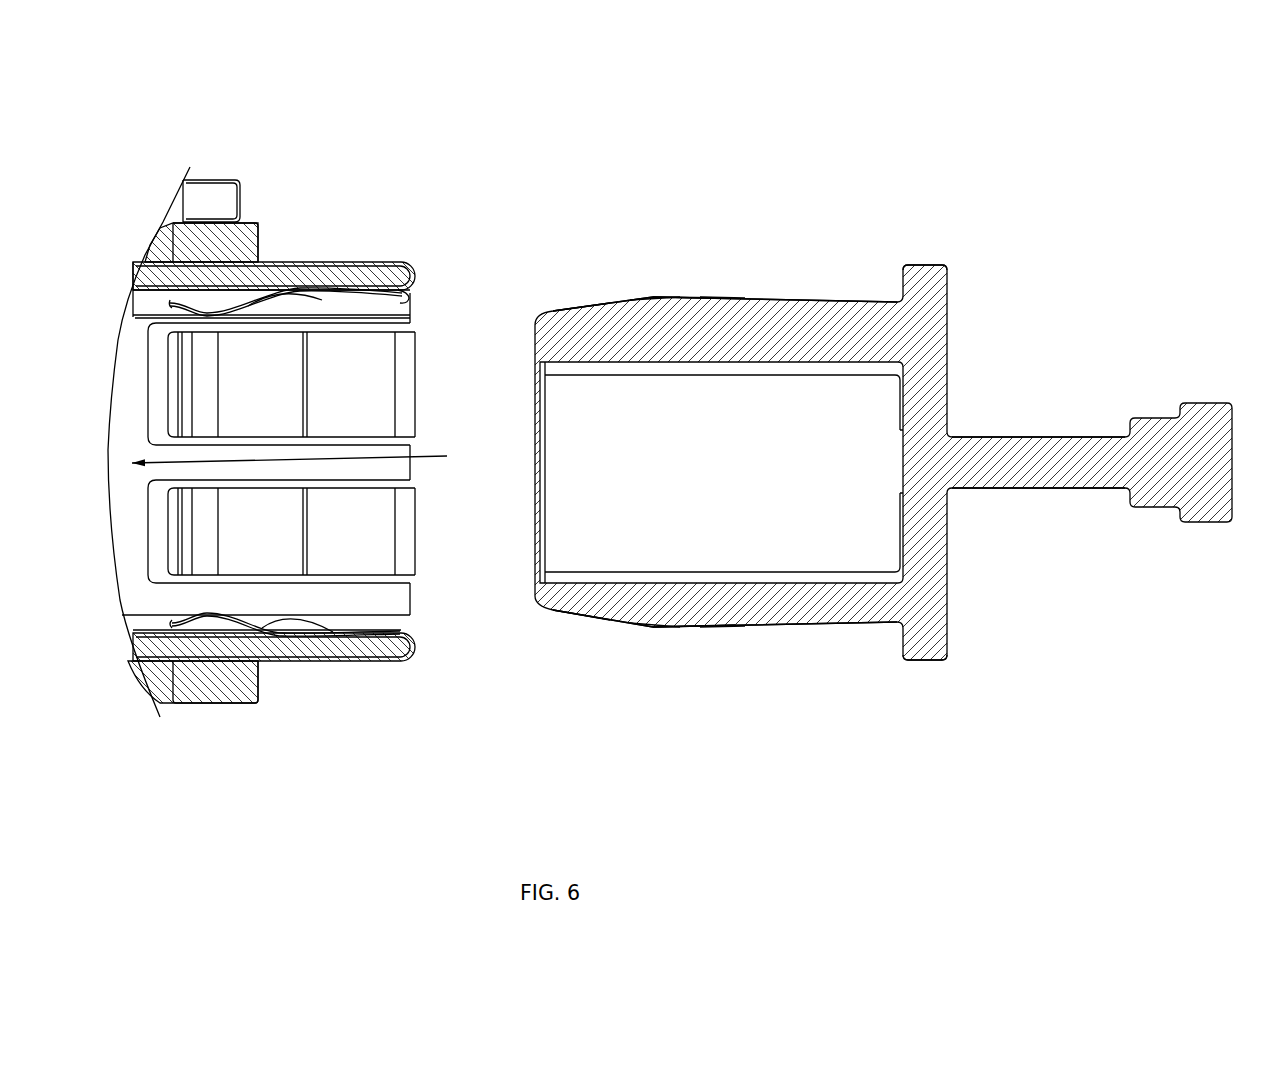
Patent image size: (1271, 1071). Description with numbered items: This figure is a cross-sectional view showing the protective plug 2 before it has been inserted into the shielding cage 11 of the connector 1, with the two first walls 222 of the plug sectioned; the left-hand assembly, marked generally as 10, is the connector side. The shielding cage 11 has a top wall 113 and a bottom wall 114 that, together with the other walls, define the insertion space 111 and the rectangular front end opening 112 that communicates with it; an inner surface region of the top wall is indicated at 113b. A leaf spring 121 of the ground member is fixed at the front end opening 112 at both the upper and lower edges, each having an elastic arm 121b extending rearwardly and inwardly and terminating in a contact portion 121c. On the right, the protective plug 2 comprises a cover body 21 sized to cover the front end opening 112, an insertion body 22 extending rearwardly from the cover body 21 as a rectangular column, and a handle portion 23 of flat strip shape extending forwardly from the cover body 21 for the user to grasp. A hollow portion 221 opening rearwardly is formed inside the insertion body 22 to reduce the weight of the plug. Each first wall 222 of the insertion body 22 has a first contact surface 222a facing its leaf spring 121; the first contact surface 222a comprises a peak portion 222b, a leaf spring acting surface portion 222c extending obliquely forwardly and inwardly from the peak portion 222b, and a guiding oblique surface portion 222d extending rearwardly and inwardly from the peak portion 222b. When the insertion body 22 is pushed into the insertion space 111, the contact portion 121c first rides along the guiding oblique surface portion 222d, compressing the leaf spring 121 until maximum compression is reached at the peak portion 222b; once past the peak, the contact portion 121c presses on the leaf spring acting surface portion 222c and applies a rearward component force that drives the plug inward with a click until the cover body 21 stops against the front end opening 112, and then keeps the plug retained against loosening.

The coil assembly 10 is at (103, 103).
The connector 1 is at (183, 714).
The shielding cage 11 is at (281, 252).
The insertion space 111 is at (313, 460).
The front end opening 112 is at (410, 297).
The top wall 113 is at (310, 265).
The upper wall inner surface 113b is at (393, 310).
The bottom wall 114 is at (312, 658).
The leaf spring 121 is at (328, 465).
The elastic arm 121b is at (300, 298).
The contact portion 121c is at (207, 312).
The protective plug 2 is at (888, 465).
The cover body 21 is at (918, 265).
The insertion body 22 is at (859, 266).
The hollow portion 221 is at (852, 524).
The first wall 222 is at (822, 293).
The first contact surface 222a is at (735, 192).
The peak portion 222b is at (653, 297).
The leaf spring acting surface portion 222c is at (720, 297).
The guiding oblique surface portion 222d is at (590, 303).
The handle portion 23 is at (1043, 437).